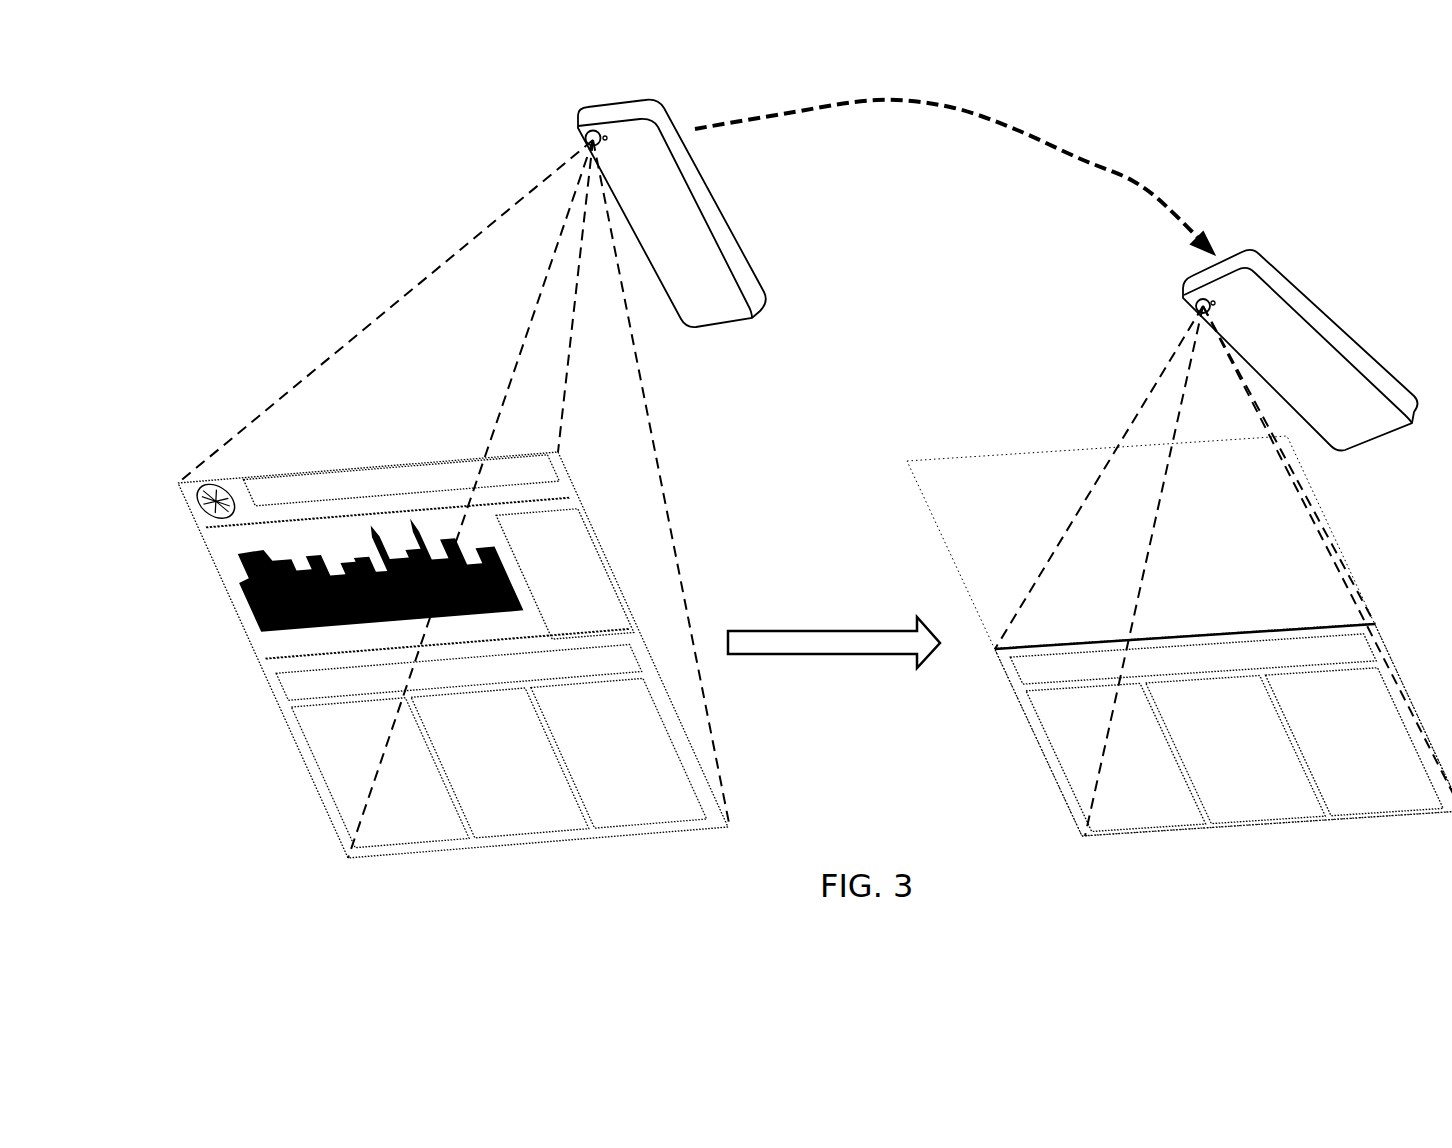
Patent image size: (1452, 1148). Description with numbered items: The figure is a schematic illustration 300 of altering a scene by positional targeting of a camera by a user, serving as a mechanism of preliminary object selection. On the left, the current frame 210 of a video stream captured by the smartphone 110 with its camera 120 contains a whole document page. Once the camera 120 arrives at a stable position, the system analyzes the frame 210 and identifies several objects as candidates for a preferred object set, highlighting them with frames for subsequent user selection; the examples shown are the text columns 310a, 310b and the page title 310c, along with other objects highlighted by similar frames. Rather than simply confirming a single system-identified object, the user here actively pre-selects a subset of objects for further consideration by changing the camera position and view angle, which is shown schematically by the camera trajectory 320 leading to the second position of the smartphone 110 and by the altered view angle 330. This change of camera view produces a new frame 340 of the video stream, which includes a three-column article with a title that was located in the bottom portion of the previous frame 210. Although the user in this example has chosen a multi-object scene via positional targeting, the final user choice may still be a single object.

The smartphone 110 is at (725, 188).
The camera 120 is at (585, 139).
The current frame 210 is at (233, 643).
The schematic illustration 300 is at (1407, 192).
The text column 310a is at (318, 772).
The text column 310b is at (514, 848).
The page title 310c is at (352, 483).
The camera trajectory 320 is at (1132, 172).
The altered view angle 330 is at (1078, 495).
The new frame 340 is at (1030, 732).